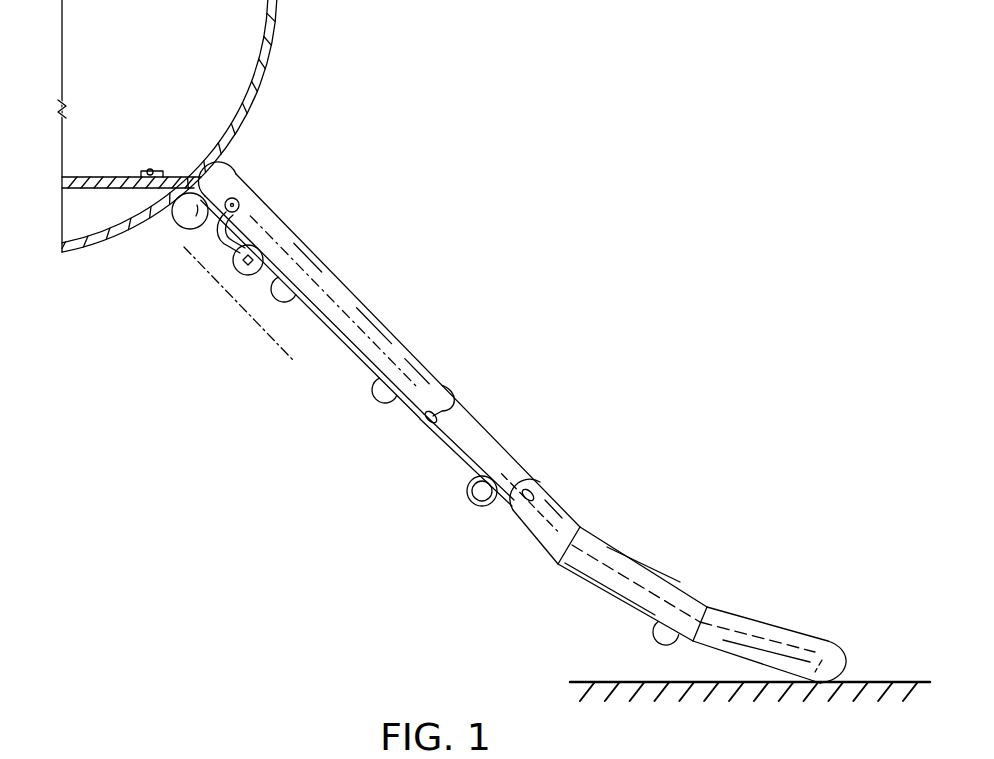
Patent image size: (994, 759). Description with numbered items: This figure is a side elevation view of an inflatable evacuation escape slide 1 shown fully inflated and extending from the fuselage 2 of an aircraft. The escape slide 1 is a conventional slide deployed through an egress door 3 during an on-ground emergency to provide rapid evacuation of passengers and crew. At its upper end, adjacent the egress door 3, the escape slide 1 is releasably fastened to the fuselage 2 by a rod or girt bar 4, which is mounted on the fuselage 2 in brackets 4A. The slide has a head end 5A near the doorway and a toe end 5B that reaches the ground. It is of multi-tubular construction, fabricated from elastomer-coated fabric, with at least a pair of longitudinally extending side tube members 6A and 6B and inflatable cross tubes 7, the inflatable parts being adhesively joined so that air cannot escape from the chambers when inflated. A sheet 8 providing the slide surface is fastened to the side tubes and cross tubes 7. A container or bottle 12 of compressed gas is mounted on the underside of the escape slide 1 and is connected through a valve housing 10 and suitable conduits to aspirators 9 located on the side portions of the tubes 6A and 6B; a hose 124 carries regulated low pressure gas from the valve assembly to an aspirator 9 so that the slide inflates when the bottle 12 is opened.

The inflatable evacuation escape slide 1 is at (501, 338).
The fuselage 2 is at (294, 18).
The egress door 3 is at (254, 69).
The girt bar 4 is at (150, 170).
The brackets 4A is at (141, 176).
The head end 5A is at (240, 154).
The toe end 5B is at (840, 613).
The tube member 6A is at (417, 372).
The tube member 6B is at (495, 451).
The cross tubes 7 is at (275, 302).
The sheet 8 is at (470, 430).
The aspirators 9 is at (238, 202).
The valve housing 10 is at (246, 266).
The bottle 12 is at (246, 278).
The hose 124 is at (228, 232).